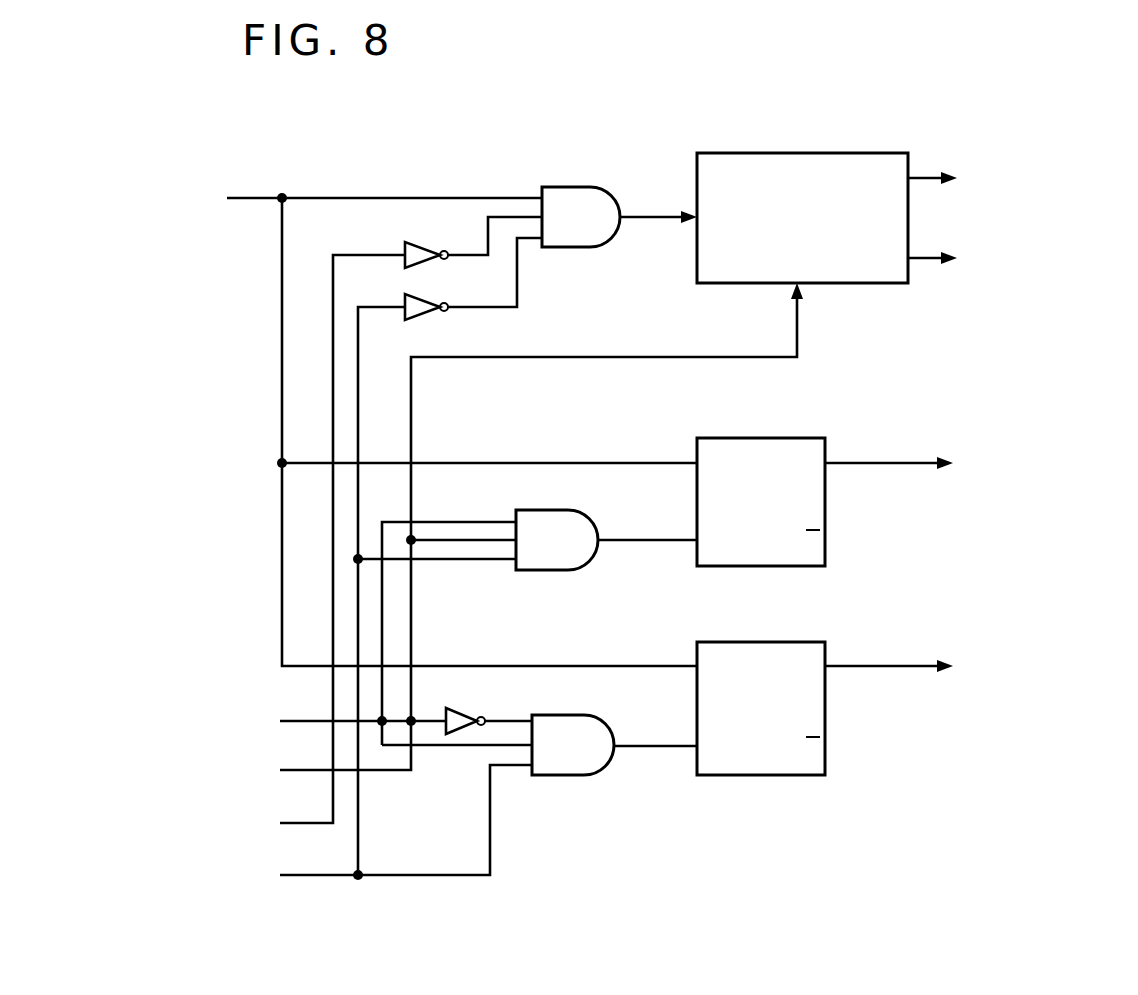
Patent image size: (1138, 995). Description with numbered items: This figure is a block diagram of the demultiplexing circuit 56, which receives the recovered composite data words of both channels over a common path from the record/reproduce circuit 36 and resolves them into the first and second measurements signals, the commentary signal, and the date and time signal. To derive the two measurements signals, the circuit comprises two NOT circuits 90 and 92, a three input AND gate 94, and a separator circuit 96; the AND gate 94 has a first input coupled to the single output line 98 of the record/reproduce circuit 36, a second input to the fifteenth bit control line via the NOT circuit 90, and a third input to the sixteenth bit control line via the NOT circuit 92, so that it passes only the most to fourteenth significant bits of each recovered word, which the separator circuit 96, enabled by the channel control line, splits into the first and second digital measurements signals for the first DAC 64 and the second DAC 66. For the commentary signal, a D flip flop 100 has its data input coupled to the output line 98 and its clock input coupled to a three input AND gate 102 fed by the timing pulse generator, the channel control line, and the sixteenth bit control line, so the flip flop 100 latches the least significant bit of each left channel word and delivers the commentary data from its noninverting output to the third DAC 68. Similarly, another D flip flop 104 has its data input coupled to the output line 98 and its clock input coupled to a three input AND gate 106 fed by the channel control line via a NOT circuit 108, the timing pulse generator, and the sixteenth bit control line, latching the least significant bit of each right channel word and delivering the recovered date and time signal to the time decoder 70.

The demultiplexing circuit 56 is at (955, 45).
The record/reproduce circuit 36 is at (307, 153).
The output line 98 is at (257, 200).
The NOT circuit 90 is at (426, 243).
The NOT circuit 92 is at (426, 300).
The three input AND gate 94 is at (572, 187).
The separator circuit 96 is at (808, 153).
The first DAC 64 is at (998, 177).
The second DAC 66 is at (1001, 257).
The third DAC 68 is at (957, 463).
The time decoder 70 is at (967, 688).
The D flip flop 100 is at (757, 438).
The three input AND gate 102 is at (544, 510).
The D flip flop 104 is at (757, 642).
The three input AND gate 106 is at (573, 715).
The NOT circuit 108 is at (464, 712).